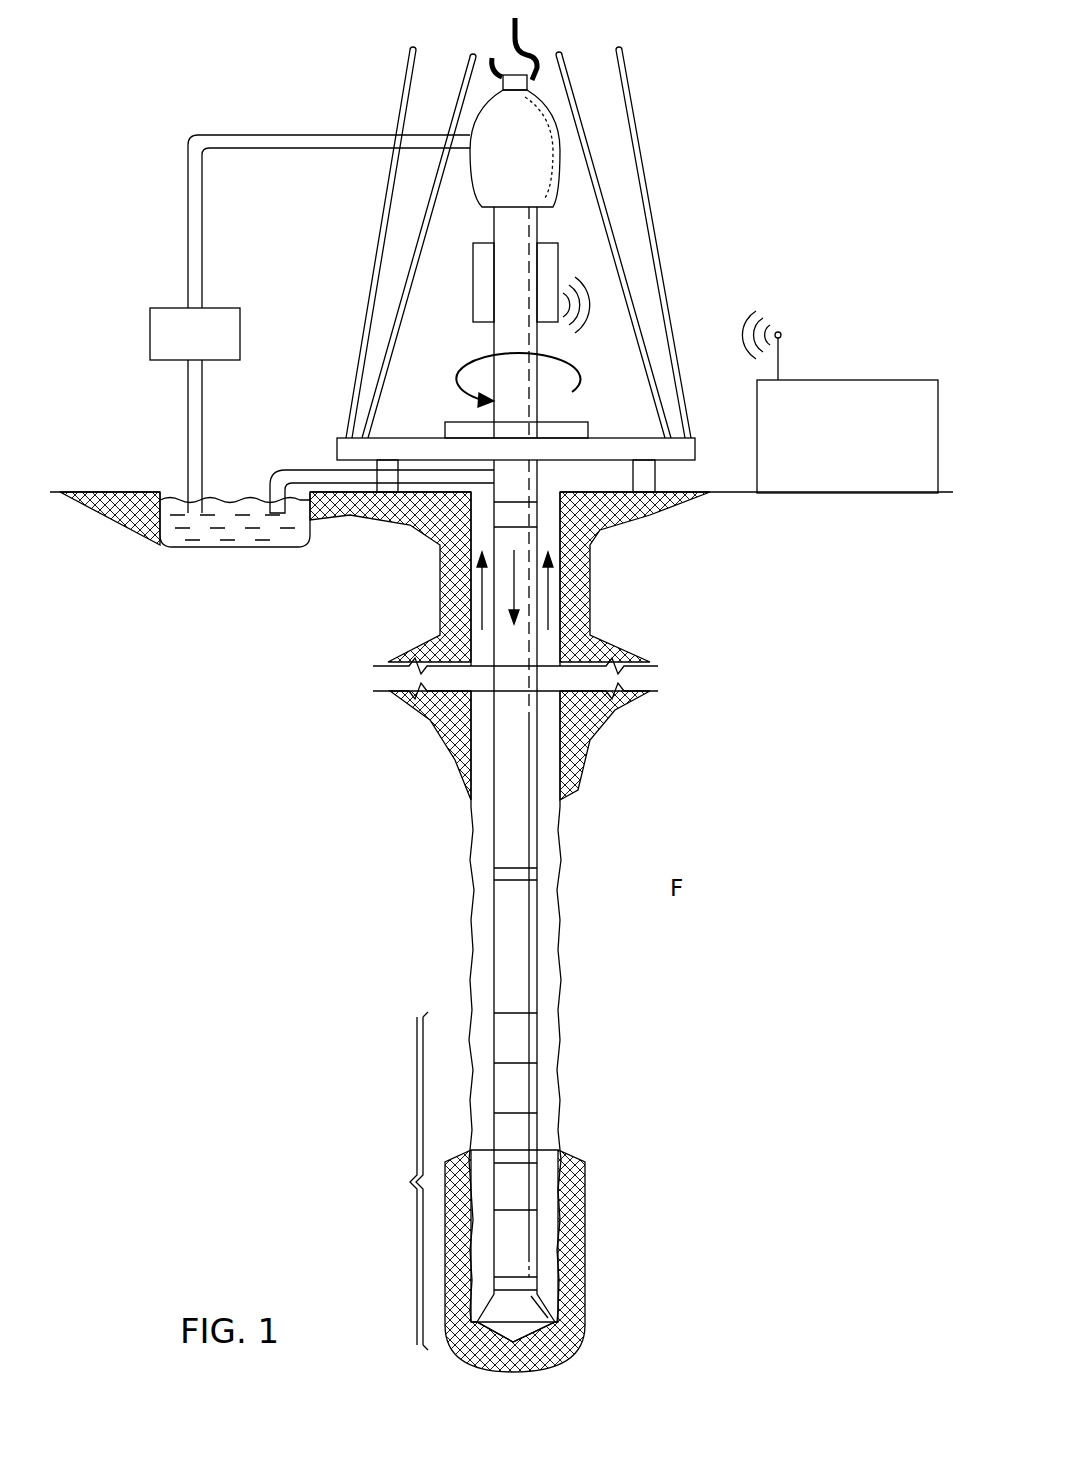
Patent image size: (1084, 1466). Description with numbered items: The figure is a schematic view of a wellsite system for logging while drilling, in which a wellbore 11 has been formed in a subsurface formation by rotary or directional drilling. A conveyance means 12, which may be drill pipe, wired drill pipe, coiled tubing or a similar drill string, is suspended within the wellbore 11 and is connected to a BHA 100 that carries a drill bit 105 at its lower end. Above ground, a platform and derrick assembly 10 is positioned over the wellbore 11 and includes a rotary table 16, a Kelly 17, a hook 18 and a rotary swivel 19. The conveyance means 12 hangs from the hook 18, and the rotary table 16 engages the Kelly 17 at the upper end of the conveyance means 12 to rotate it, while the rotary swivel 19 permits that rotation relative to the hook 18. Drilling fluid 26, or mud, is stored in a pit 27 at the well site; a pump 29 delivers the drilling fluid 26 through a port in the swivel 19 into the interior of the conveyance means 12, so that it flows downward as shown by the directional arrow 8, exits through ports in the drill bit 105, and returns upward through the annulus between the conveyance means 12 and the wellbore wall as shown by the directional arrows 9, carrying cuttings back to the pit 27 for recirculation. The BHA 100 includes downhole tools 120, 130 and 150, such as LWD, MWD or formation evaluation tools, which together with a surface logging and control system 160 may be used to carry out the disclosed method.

The platform and derrick assembly 10 is at (727, 150).
The hook 18 is at (513, 35).
The rotary swivel 19 is at (478, 190).
The Kelly 17 is at (494, 345).
The rotary table 16 is at (455, 423).
The conveyance means 12 is at (549, 468).
The pump 29 is at (150, 333).
The pit 27 is at (249, 482).
The drilling fluid 26 is at (237, 538).
The wellbore 11 is at (562, 530).
The directional arrow 8 is at (518, 578).
The directional arrows 9 is at (482, 603).
The logging and control system 160 is at (848, 380).
The BHA 100 is at (449, 1181).
The downhole tool 120 is at (538, 1088).
The downhole tool 130 is at (538, 1136).
The downhole tool 150 is at (538, 1244).
The drill bit 105 is at (550, 1300).